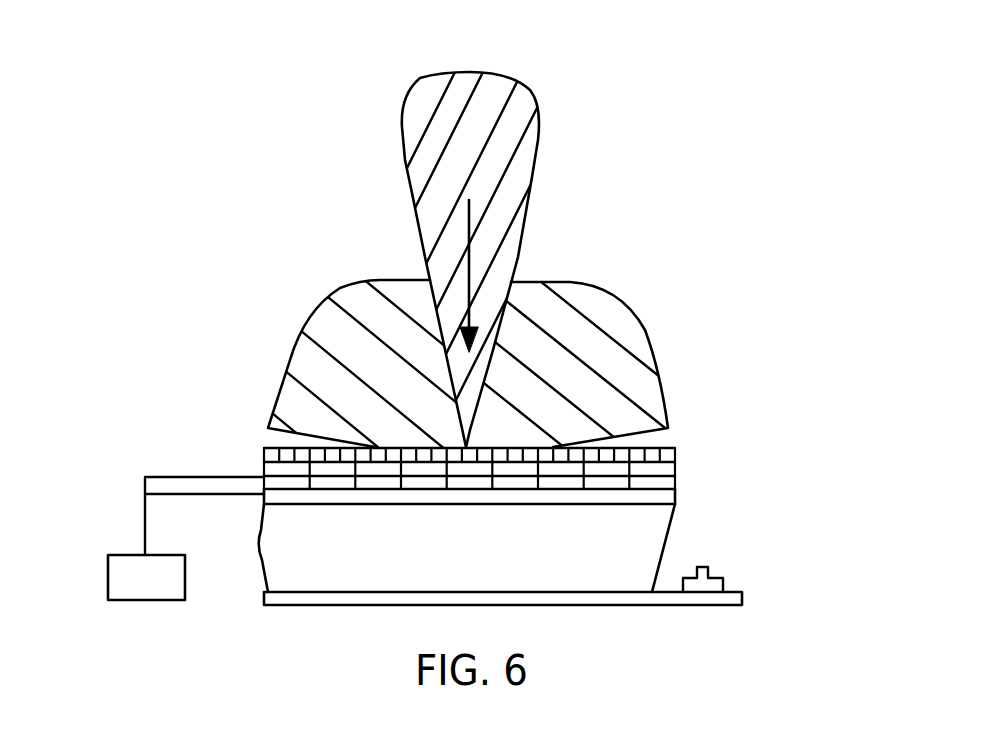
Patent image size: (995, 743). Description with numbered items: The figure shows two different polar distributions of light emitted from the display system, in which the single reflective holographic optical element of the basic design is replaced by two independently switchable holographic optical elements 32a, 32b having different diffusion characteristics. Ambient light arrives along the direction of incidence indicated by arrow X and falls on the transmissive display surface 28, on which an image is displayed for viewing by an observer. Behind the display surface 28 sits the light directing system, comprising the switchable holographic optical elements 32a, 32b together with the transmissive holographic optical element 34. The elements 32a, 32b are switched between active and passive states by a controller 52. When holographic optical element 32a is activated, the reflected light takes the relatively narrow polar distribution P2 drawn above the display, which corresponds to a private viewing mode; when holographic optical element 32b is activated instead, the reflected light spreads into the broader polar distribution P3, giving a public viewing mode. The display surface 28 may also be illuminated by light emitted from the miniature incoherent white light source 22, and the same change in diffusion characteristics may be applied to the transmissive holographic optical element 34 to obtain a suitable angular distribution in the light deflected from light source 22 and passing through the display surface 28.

The polar distribution P2 is at (539, 213).
The polar distribution P3 is at (632, 320).
The arrow X is at (462, 278).
The display surface 28 is at (675, 455).
The switchable holographic optical element 32a is at (675, 468).
The switchable holographic optical element 32b is at (675, 480).
The transmissive holographic optical element 34 is at (675, 497).
The miniature incoherent white light source 22 is at (717, 578).
The controller 52 is at (107, 567).